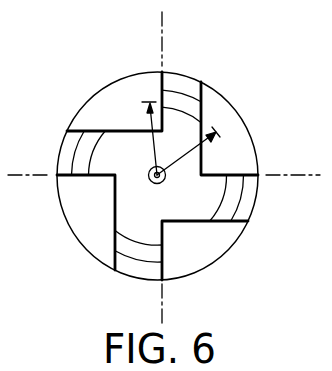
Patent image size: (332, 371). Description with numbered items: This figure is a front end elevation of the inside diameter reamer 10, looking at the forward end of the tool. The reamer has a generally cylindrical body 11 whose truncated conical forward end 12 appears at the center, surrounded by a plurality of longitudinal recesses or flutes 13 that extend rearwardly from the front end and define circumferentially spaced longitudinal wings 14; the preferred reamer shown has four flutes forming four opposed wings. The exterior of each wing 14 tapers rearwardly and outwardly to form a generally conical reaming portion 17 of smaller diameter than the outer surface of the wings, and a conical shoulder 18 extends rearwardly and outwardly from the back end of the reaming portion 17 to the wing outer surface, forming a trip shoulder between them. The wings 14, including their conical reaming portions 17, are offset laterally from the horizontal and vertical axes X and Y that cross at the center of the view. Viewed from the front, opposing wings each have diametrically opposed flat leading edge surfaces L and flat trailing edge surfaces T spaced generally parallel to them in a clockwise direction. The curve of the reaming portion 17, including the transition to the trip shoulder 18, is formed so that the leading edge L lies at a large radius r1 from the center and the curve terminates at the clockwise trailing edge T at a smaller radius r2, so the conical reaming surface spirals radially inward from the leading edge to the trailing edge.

The inside diameter reamer 10 is at (280, 83).
The cylindrical body 11 is at (76, 117).
The truncated conical forward end 12 is at (172, 214).
The longitudinal recesses or flutes 13 is at (128, 81).
The longitudinal wings 14 is at (180, 69).
The conical reaming portion 17 is at (212, 104).
The conical shoulder 18 is at (70, 143).
The flat trailing edge surface T is at (86, 112).
The flat leading edge surface L is at (157, 72).
The horizontal axis X is at (32, 178).
The vertical axis Y is at (163, 20).
The large radius r1 is at (153, 142).
The smaller radius r2 is at (185, 155).